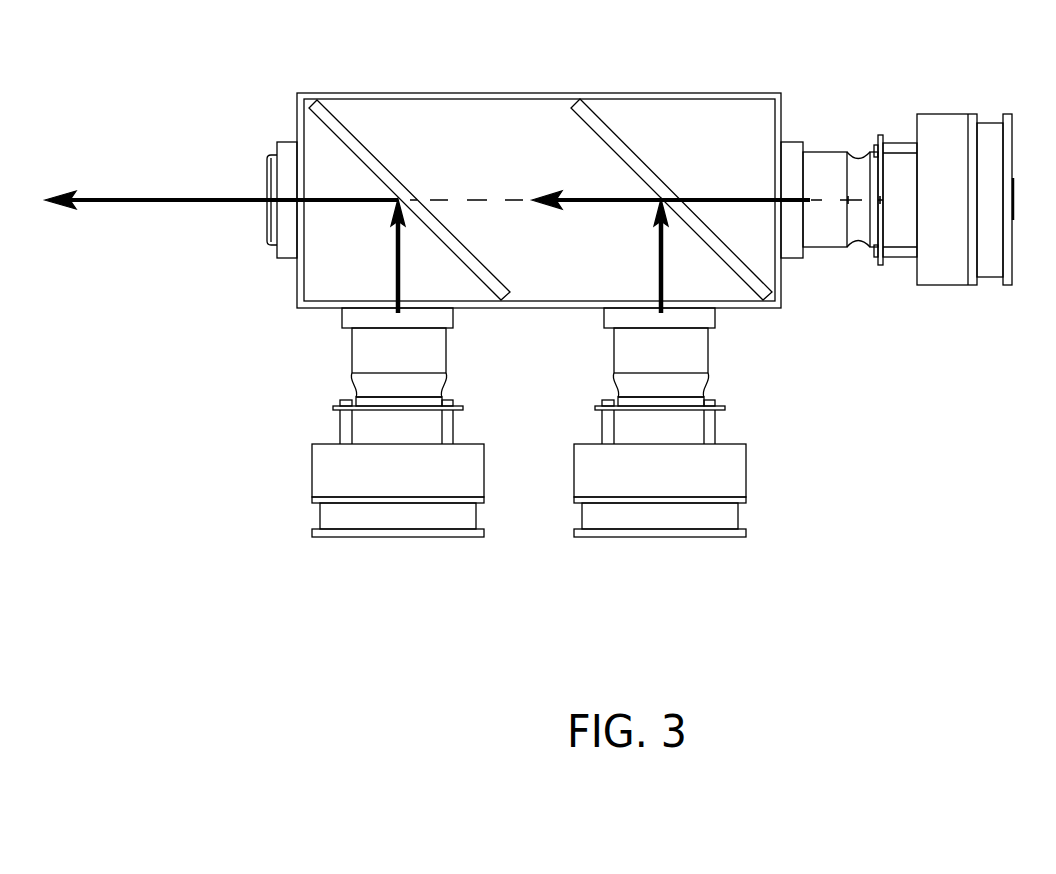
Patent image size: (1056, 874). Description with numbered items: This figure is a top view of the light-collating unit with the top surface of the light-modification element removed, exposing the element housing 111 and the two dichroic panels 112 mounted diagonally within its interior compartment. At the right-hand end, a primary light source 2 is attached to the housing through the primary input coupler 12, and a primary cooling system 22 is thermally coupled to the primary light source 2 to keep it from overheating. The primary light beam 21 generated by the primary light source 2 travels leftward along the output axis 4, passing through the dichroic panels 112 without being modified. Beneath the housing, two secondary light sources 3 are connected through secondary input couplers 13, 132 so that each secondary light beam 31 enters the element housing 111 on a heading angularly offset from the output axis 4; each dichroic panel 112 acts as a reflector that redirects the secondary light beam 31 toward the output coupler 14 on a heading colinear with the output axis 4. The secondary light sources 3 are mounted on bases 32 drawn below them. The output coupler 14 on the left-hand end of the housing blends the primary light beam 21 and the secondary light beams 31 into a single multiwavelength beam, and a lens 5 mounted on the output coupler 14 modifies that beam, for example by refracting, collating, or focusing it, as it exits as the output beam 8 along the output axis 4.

The element housing 111 is at (651, 96).
The dichroic panel 112 is at (585, 118).
The output axis 4 is at (441, 198).
The primary light beam 21 is at (742, 198).
The output light beam 8 is at (172, 199).
The secondary light beam 31 is at (397, 262).
The output coupler 14 is at (288, 147).
The lens 5 is at (270, 233).
The primary input coupler 12 is at (797, 250).
The primary light source 2 is at (828, 155).
The primary cooling system 22 is at (955, 120).
The secondary light source 3 is at (357, 352).
The secondary input coupler 13 is at (573, 345).
The flange 132 is at (453, 318).
The light source module base 32 is at (327, 472).